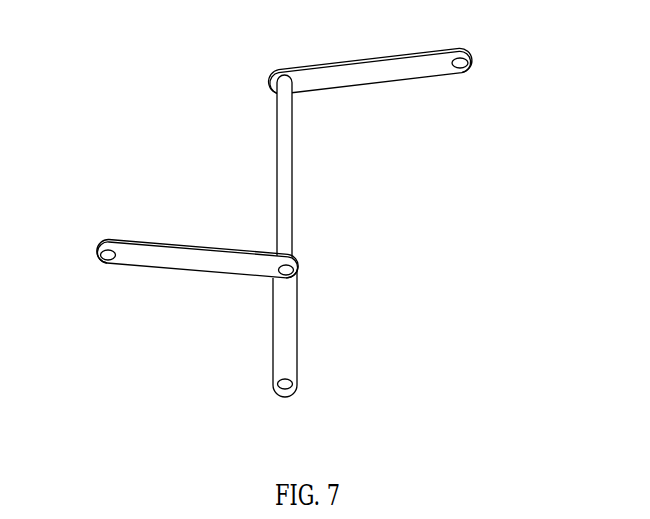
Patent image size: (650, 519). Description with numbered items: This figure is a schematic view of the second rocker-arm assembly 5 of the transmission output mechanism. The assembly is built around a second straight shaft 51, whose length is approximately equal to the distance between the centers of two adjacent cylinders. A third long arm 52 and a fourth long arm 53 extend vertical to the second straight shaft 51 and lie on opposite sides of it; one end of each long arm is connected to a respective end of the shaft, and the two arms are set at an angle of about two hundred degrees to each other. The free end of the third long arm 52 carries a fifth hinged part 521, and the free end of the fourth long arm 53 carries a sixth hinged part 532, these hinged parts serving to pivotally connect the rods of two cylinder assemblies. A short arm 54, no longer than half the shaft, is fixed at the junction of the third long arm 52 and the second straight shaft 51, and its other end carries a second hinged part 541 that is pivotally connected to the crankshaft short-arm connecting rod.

The second rocker-arm assembly 5 is at (137, 95).
The second straight shaft 51 is at (285, 127).
The third long arm 52 is at (162, 234).
The fifth hinged part 521 is at (100, 258).
The fourth long arm 53 is at (425, 131).
The sixth hinged part 532 is at (458, 62).
The short arm 54 is at (164, 362).
The second hinged part 541 is at (277, 385).